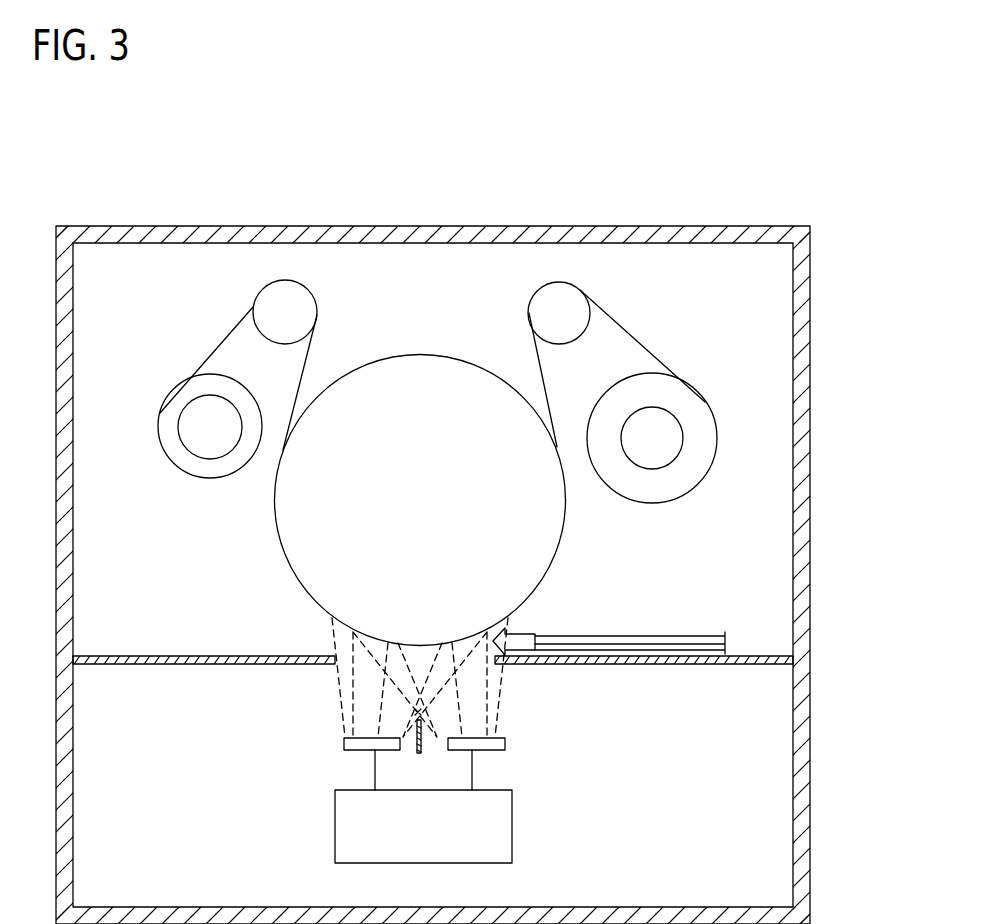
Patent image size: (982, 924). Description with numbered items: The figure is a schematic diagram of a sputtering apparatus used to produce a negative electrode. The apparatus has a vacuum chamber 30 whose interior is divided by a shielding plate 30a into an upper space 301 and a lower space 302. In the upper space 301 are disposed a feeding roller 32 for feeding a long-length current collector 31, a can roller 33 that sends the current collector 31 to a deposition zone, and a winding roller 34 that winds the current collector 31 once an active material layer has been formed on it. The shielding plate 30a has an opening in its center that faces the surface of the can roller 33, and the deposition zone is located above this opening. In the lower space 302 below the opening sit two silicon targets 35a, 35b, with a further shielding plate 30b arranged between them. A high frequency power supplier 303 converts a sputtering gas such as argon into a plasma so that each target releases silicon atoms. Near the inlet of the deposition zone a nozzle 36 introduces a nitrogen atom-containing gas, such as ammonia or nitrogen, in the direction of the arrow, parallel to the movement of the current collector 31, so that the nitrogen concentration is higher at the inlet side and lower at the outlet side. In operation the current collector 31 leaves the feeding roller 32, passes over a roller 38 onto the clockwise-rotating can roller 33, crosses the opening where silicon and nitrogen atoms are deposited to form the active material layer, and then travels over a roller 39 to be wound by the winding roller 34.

The vacuum chamber 30 is at (798, 308).
The shielding plate 30a is at (197, 664).
The shielding plate 30b is at (421, 753).
The upper space 301 is at (757, 525).
The lower space 302 is at (735, 821).
The high frequency power supplier 303 is at (335, 830).
The current collector 31 is at (218, 337).
The feeding roller 32 is at (665, 437).
The can roller 33 is at (421, 380).
The winding roller 34 is at (203, 423).
The silicon target 35a is at (505, 745).
The silicon target 35b is at (343, 745).
The nozzle 36 is at (623, 636).
The roller 38 is at (568, 303).
The roller 39 is at (295, 306).